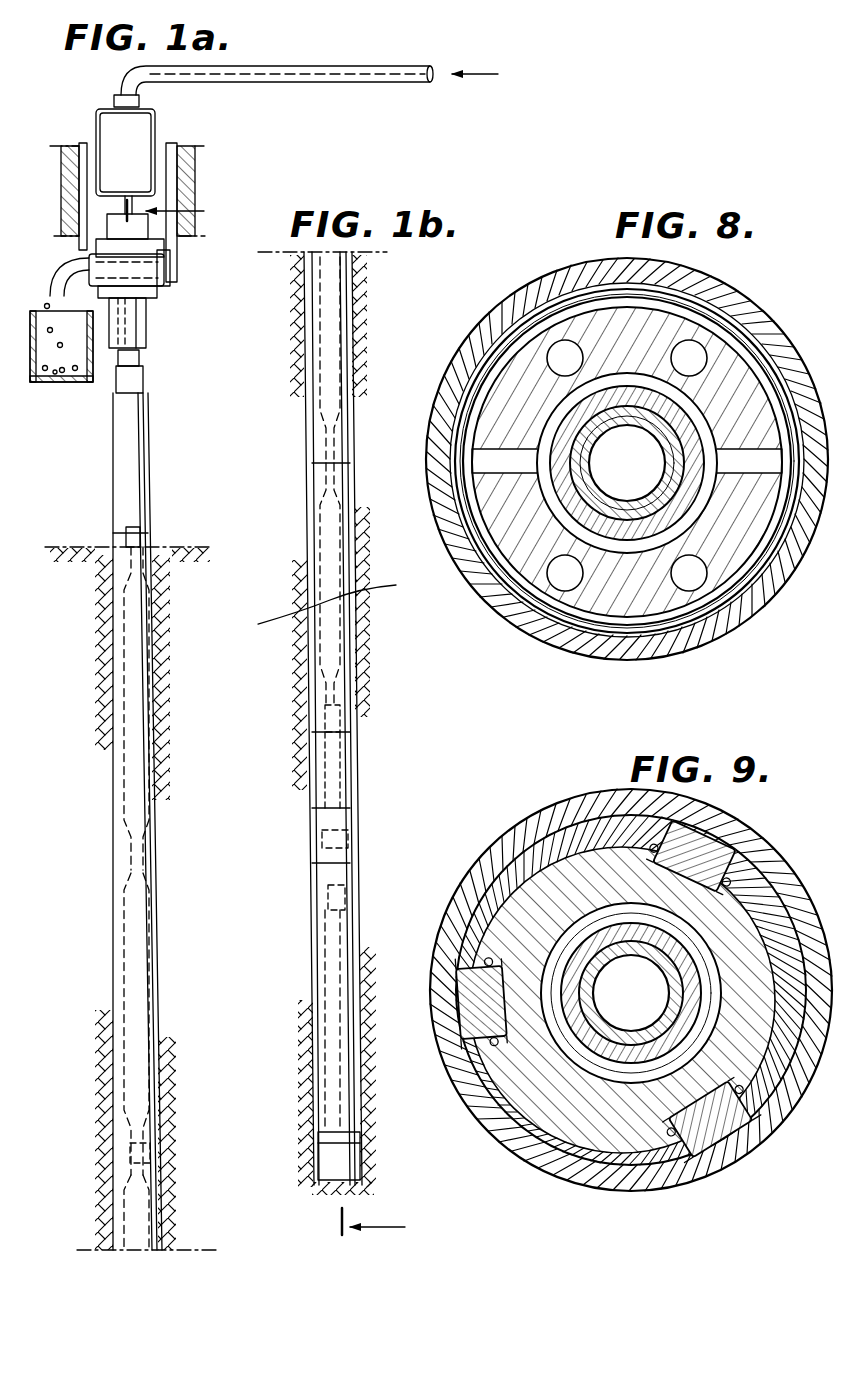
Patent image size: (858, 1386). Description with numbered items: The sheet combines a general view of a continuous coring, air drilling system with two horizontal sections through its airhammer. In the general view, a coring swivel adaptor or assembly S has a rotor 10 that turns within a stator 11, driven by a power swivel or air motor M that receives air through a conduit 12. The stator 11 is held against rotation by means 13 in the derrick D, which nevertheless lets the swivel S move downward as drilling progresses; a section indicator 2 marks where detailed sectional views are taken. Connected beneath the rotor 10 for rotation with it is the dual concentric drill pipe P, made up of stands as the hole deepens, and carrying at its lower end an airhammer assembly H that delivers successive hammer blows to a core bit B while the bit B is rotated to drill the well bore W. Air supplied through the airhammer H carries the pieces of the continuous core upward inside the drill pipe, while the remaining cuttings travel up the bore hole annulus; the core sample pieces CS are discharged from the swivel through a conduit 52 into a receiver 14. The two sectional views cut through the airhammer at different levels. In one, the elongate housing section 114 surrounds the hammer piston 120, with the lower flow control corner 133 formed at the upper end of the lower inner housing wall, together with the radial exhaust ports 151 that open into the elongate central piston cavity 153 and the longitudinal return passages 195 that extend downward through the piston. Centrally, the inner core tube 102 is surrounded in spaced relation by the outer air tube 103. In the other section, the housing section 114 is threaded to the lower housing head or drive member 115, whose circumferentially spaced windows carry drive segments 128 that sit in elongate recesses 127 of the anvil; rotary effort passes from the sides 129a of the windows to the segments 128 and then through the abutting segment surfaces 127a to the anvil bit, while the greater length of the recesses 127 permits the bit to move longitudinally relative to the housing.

In FIG. 1A, the conduit 12 is at (347, 64).
In FIG. 1A, the power swivel or air motor M is at (92, 124).
In FIG. 1A, the derrick D is at (197, 130).
In FIG. 1A, the rotor 10 is at (106, 230).
In FIG. 1A, the section line 2- 2 is at (175, 213).
In FIG. 1B, the section line 2- 2 is at (384, 1225).
In FIG. 1A, the means for holding stator 13 is at (178, 178).
In FIG. 1A, the stator 11 is at (172, 264).
In FIG. 1A, the conduit 52 is at (58, 265).
In FIG. 1A, the coring swivel adaptor S is at (168, 298).
In FIG. 1A, the core sample pieces CS is at (40, 383).
In FIG. 1A, the receiver 14 is at (80, 383).
In FIG. 1A, the dual concentric drill pipe P is at (140, 690).
In FIG. 1A, the well bore W is at (124, 952).
In FIG. 1B, the well bore W is at (313, 825).
In FIG. 1B, the airhammer assembly H is at (318, 975).
In FIG. 1B, the core bit B is at (316, 1155).
In FIG. 8, the housing section 114 is at (722, 292).
In FIG. 9, the housing section 114 is at (474, 872).
In FIG. 8, the lower flow control corner 133 is at (478, 360).
In FIG. 8, the hammer piston 120 is at (515, 556).
In FIG. 9, the hammer piston 120 is at (622, 1000).
In FIG. 8, the longitudinal return passages 195 is at (700, 351).
In FIG. 8, the radial exhaust ports 151 is at (490, 461).
In FIG. 8, the central piston cavity 153 is at (540, 492).
In FIG. 8, the air tube 103 is at (567, 428).
In FIG. 9, the air tube 103 is at (692, 1000).
In FIG. 8, the core tube 102 is at (627, 512).
In FIG. 9, the core tube 102 is at (667, 964).
In FIG. 9, the drive member 115 is at (770, 905).
In FIG. 9, the drive segments 128 is at (700, 845).
In FIG. 9, the elongate recesses 127 is at (668, 872).
In FIG. 9, the abutting segment surfaces 127a is at (492, 968).
In FIG. 9, the window sides 129a is at (460, 1006).